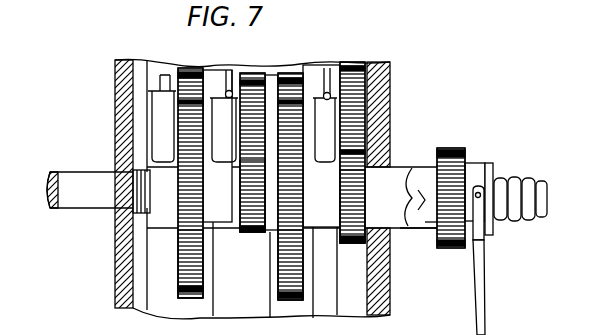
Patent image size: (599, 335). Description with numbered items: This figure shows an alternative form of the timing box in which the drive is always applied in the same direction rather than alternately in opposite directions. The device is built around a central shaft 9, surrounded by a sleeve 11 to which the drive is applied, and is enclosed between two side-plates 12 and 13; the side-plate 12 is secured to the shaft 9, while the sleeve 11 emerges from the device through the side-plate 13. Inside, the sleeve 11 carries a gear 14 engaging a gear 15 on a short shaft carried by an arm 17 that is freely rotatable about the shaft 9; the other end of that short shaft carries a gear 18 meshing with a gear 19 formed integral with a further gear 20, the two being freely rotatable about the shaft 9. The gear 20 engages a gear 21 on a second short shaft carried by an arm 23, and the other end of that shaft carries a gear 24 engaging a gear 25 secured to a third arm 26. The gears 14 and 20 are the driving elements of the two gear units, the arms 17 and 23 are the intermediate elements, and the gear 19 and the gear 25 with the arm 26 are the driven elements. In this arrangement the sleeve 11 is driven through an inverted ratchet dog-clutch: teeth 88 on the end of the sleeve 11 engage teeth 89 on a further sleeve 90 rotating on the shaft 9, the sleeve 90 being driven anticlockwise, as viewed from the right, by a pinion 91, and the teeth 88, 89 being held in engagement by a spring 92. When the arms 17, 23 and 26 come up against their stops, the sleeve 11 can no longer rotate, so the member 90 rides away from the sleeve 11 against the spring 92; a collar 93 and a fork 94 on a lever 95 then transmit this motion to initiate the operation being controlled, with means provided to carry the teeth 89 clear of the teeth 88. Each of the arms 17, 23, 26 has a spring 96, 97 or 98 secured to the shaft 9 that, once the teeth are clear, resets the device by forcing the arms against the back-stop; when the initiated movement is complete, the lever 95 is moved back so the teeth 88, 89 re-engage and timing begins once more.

The central shaft 9 is at (85, 200).
The sleeve 11 is at (395, 230).
The side-plate 12 is at (115, 86).
The side-plate 13 is at (390, 107).
The gear 14 is at (356, 245).
The gear 15 is at (358, 78).
The arm 17 is at (327, 90).
The gear 18 is at (294, 80).
The gear 19 is at (280, 240).
The gear 20 is at (252, 238).
The gear 21 is at (258, 80).
The arm 23 is at (229, 86).
The gear 24 is at (190, 72).
The gear 25 is at (176, 280).
The arm 26 is at (165, 74).
The teeth 88 is at (421, 231).
The teeth 89 is at (406, 178).
The sleeve 90 is at (432, 231).
The pinion 91 is at (459, 160).
The spring 92 is at (525, 178).
The collar 93 is at (492, 165).
The fork 94 is at (487, 238).
The lever 95 is at (489, 290).
The spring 96 is at (312, 226).
The spring 97 is at (216, 214).
The spring 98 is at (116, 226).